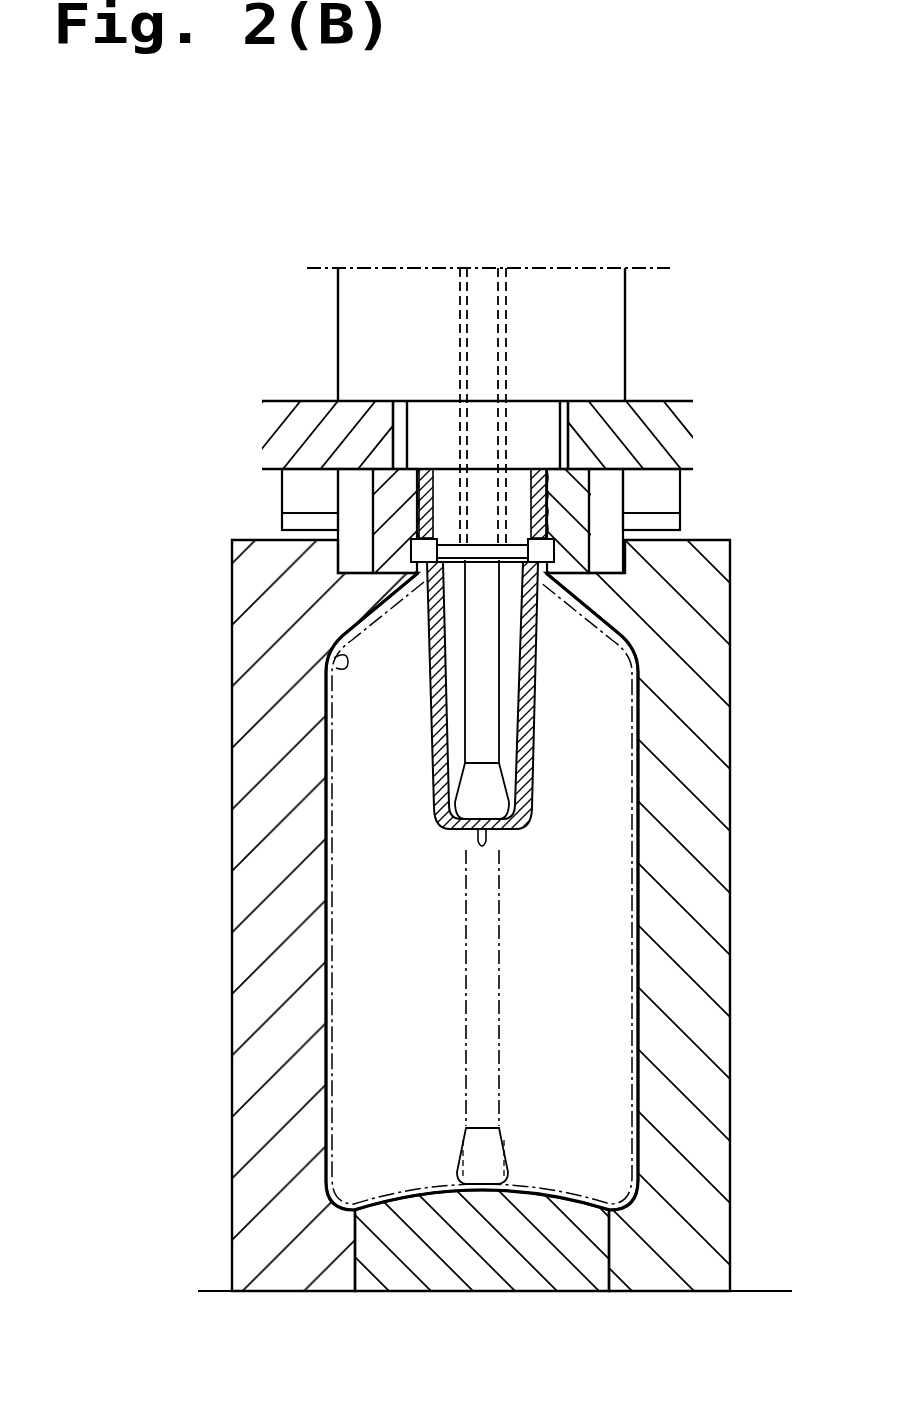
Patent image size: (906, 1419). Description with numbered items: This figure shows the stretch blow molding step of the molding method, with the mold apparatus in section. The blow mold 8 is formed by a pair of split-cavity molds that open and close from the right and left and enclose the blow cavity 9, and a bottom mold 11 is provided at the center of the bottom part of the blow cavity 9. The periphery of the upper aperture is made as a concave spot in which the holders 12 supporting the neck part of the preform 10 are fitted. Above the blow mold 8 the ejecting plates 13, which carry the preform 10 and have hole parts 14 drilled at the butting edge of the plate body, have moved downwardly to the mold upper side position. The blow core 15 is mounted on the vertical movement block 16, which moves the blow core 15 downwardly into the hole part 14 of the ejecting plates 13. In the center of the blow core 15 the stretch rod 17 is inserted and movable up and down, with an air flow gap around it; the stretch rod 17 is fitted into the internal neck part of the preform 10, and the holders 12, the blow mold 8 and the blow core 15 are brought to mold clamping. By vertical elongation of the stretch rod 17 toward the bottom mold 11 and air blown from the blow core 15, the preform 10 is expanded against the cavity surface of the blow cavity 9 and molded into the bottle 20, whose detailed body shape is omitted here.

The blow mold 8 is at (267, 833).
The blow cavity 9 is at (580, 958).
The preform 10 is at (530, 702).
The bottom mold 11 is at (424, 1250).
The holders 12 is at (415, 502).
The ejecting plates 13 is at (297, 443).
The hole parts 14 is at (558, 413).
The blow core 15 is at (497, 516).
The vertical movement block 16 is at (378, 307).
The stretch rod 17 is at (480, 658).
The bottle 20 is at (336, 658).